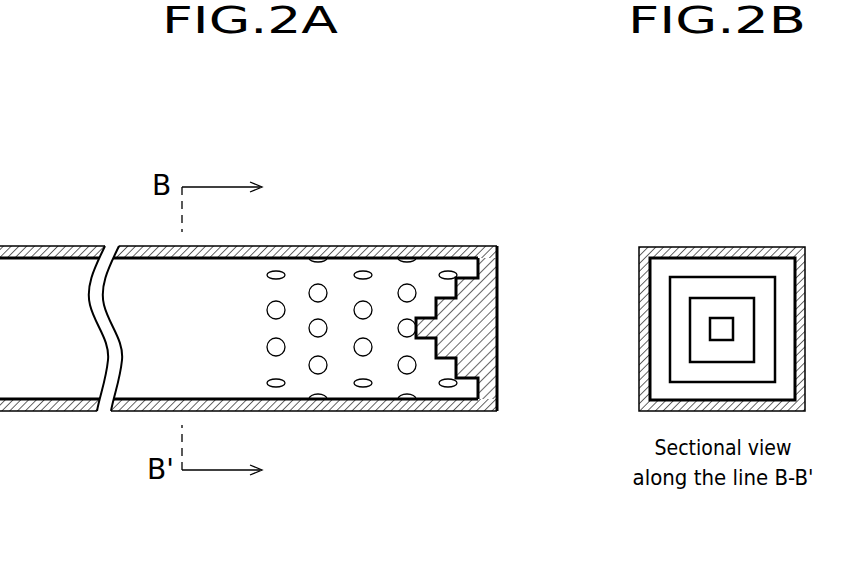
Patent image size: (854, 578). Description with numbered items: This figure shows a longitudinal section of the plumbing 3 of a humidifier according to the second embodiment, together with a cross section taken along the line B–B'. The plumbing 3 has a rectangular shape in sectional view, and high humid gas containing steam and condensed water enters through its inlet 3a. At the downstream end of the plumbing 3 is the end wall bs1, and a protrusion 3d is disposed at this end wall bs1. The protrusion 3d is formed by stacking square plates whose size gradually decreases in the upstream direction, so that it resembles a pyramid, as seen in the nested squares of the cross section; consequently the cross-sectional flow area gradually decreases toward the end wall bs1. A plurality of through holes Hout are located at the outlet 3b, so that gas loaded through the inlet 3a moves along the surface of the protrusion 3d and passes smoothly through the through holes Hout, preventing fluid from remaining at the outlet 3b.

In FIG. 2A, the plumbing 3 is at (248, 328).
In FIG. 2A, the inlet 3a is at (43, 273).
In FIG. 2A, the outlet 3b is at (363, 303).
In FIG. 2A, the protrusion 3d is at (470, 300).
In FIG. 2B, the protrusion 3d is at (678, 247).
In FIG. 2A, the end wall bs1 is at (497, 350).
In FIG. 2A, the through holes Hout is at (341, 220).